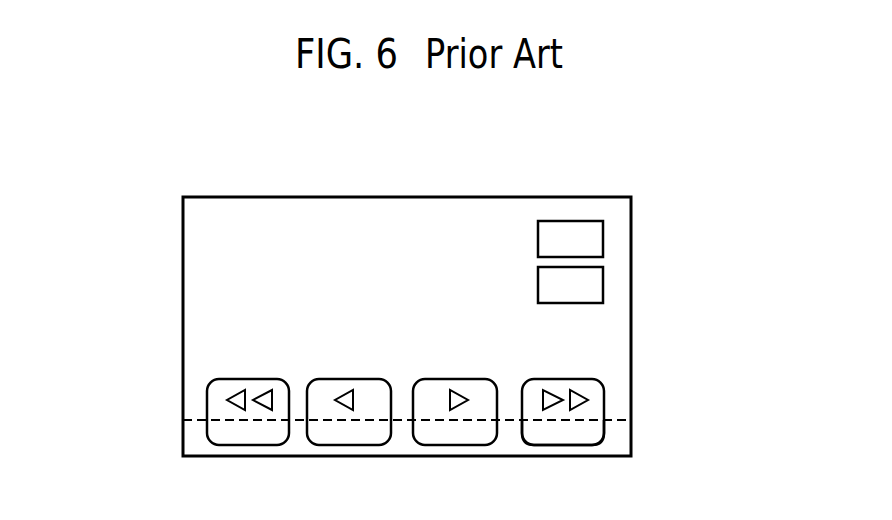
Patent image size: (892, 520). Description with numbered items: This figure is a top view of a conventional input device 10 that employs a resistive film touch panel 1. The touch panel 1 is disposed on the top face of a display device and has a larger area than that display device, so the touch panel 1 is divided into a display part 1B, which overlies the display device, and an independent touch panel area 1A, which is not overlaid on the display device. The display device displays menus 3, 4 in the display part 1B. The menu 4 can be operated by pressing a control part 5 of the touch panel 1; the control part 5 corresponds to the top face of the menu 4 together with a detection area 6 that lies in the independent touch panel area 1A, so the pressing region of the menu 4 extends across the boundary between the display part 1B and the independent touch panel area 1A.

The input device 10 is at (613, 185).
The touch panel 1 is at (101, 202).
The independent touch panel area 1A is at (172, 422).
The display part 1B is at (170, 202).
The menu 3 is at (588, 240).
The menu 4 is at (592, 398).
The control part 5 is at (687, 362).
The detection area 6 is at (588, 433).